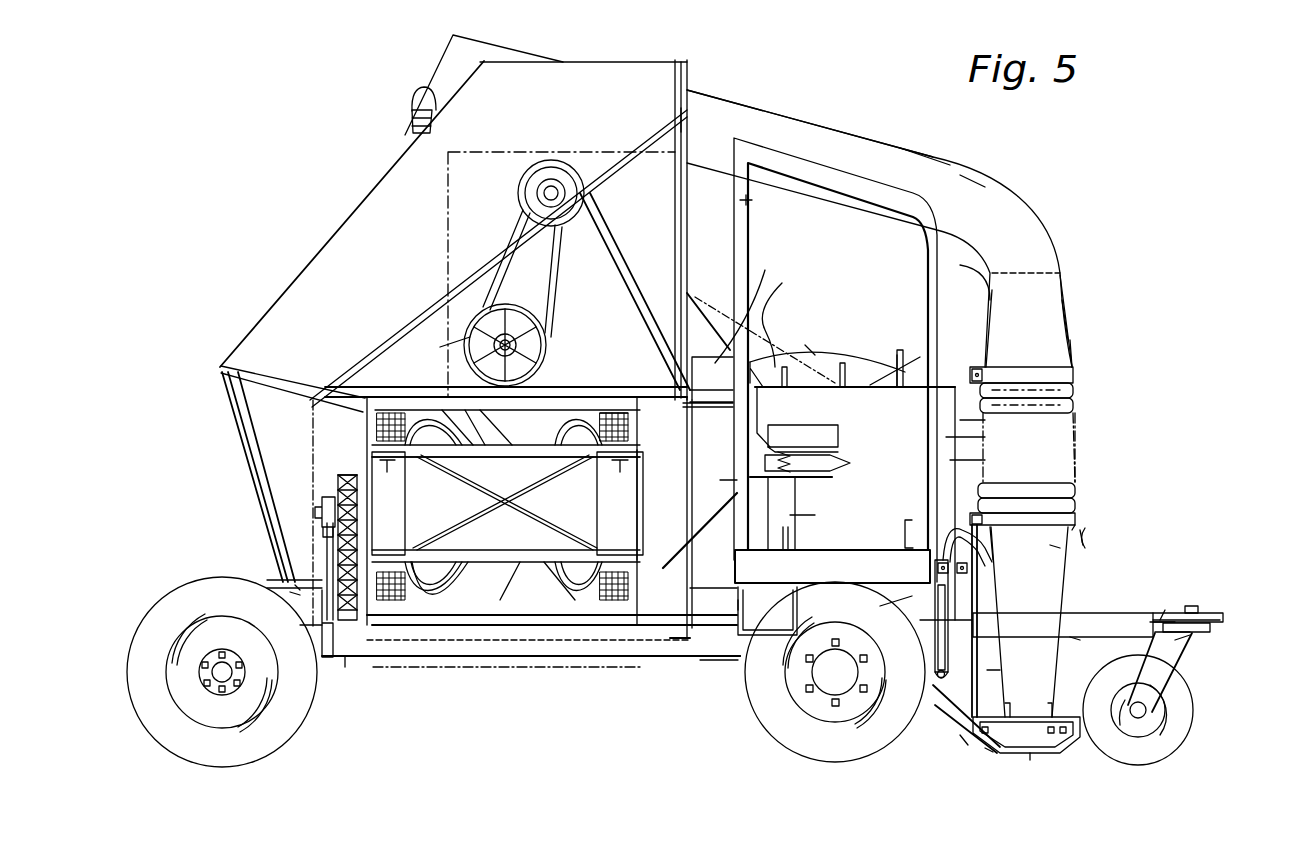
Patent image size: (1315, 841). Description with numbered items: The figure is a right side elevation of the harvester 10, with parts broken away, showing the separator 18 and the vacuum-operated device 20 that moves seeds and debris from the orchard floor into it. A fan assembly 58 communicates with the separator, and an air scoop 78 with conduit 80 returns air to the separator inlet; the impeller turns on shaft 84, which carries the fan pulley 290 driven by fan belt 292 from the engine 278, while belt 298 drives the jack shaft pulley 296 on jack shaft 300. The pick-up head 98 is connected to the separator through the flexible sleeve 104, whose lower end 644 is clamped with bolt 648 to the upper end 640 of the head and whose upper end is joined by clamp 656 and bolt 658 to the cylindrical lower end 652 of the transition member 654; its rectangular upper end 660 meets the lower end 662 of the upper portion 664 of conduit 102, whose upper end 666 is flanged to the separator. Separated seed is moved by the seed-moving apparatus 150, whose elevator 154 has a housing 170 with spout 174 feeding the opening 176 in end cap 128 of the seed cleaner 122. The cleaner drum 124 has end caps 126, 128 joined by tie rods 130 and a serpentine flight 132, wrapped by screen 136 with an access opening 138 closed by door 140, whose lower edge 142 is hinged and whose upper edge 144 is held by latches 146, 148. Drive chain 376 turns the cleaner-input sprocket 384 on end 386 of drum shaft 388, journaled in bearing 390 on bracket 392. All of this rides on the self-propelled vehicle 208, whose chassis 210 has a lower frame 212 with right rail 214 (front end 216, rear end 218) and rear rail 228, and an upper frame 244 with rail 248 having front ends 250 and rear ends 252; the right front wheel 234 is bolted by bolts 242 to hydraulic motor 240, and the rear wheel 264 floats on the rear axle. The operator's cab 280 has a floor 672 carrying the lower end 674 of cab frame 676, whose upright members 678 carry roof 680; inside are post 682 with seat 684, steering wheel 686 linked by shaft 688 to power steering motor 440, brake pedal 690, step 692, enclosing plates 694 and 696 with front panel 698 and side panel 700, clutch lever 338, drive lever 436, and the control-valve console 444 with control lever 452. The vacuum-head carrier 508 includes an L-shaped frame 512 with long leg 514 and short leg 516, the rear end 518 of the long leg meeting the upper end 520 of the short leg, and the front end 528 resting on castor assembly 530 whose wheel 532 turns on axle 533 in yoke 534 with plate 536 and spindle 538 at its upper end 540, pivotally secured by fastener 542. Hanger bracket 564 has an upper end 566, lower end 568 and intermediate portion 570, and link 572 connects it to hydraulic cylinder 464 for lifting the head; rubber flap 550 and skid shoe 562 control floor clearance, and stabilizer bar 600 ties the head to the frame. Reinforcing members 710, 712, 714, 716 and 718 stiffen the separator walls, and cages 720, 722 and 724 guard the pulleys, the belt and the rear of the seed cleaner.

The harvester 10 is at (1172, 270).
The separator 18 is at (350, 208).
The device 20 is at (1100, 525).
The fan assembly 58 is at (497, 40).
The air scoop 78 is at (429, 87).
The conduit 80 is at (412, 125).
The shaft 84 is at (552, 190).
The pick-up head 98 is at (1100, 527).
The conduit 102 is at (895, 138).
The flexible sleeve 104 is at (1065, 462).
The seed cleaner 122 is at (640, 632).
The cylindrical drum 124 is at (620, 632).
The end cap 126 is at (372, 657).
The end cap 128 is at (705, 557).
The tie rods 130 is at (493, 444).
The serpentine-shaped flight 132 is at (445, 600).
The screen 136 is at (385, 608).
The access opening 138 is at (425, 525).
The door 140 is at (653, 512).
The lower edge 142 is at (640, 530).
The upper edge 144 is at (628, 440).
The latch 146 is at (385, 480).
The latch 148 is at (612, 478).
The seed-moving apparatus 150 is at (820, 545).
The elevator 154 is at (700, 340).
The housing 170 is at (790, 262).
The spout 174 is at (790, 495).
The opening 176 is at (728, 513).
The self-propelled vehicle 208 is at (442, 672).
The chassis 210 is at (723, 645).
The lower frame 212 is at (668, 657).
The right rail 214 is at (735, 672).
The front end 216 is at (935, 675).
The rear end 218 is at (350, 660).
The rear rail 228 is at (318, 632).
The right front wheel 234 is at (840, 763).
The hydraulic motor 240 is at (830, 680).
The bolts 242 is at (840, 643).
The upper frame 244 is at (300, 566).
The rail 248 is at (277, 583).
The front ends 250 is at (878, 608).
The rear ends 252 is at (292, 594).
The rear wheel 264 is at (130, 688).
The engine 278 is at (812, 320).
The operator's cab 280 is at (978, 195).
The fan pulley 290 is at (566, 175).
The fan belt 292 is at (600, 283).
The jack shaft pulley 296 is at (470, 340).
The belt 298 is at (518, 224).
The jack shaft 300 is at (546, 345).
The clutch lever 338 is at (782, 283).
The auger-cleaner drive chain 376 is at (345, 478).
The cleaner-input sprocket 384 is at (350, 475).
The end 386 is at (315, 513).
The cleaner-drum shaft 388 is at (405, 504).
The bearing 390 is at (320, 493).
The bracket 392 is at (333, 598).
The lever 436 is at (843, 362).
The power steering motor 440 is at (983, 432).
The hydraulic-control-valve console 444 is at (953, 358).
The control lever 452 is at (898, 348).
The hydraulic cylinder 464 is at (970, 740).
The vacuum-head carrier 508 is at (1130, 610).
The L-shaped frame 512 is at (1160, 603).
The long leg 514 is at (1090, 635).
The short leg 516 is at (1000, 670).
The rear end 518 is at (1025, 612).
The upper end 520 is at (1000, 625).
The front end 528 is at (1212, 626).
The castor assembly 530 is at (1225, 735).
The wheel 532 is at (1193, 710).
The axle 533 is at (1140, 722).
The yoke 534 is at (1185, 668).
The plate 536 is at (1195, 635).
The spindle 538 is at (1193, 605).
The upper end 540 is at (1195, 640).
The fastener 542 is at (1210, 612).
The first rubber flap 550 is at (1007, 755).
The skid shoe 562 is at (1040, 755).
The hanger bracket 564 is at (1030, 518).
The upper end 566 is at (1000, 555).
The lower end 568 is at (952, 760).
The intermediate portion 570 is at (995, 605).
The link 572 is at (995, 538).
The stabilizer bar 600 is at (968, 738).
The upper end 640 is at (1062, 548).
The lower end 644 is at (1002, 507).
The bolt 648 is at (988, 485).
The lower end 652 is at (1078, 352).
The transition member 654 is at (1072, 322).
The clamp 656 is at (1075, 374).
The bolt 658 is at (985, 365).
The upper end 660 is at (1070, 294).
The lower end 662 is at (1070, 262).
The upper portion 664 is at (952, 165).
The upper end 666 is at (695, 90).
The floor 672 is at (832, 548).
The lower end 674 is at (750, 555).
The cab frame 676 is at (945, 280).
The upright members 678 is at (752, 205).
The roof 680 is at (780, 148).
The post 682 is at (812, 516).
The seat 684 is at (840, 440).
The steering wheel 686 is at (865, 365).
The shaft 688 is at (910, 395).
The brake pedal 690 is at (903, 518).
The step 692 is at (770, 640).
The plate 694 is at (796, 412).
The plate 696 is at (987, 400).
The front panel 698 is at (955, 464).
The side panel 700 is at (960, 437).
The reinforcing member 710 is at (690, 118).
The reinforcing member 712 is at (628, 170).
The reinforcing member 714 is at (438, 370).
The reinforcing member 716 is at (260, 368).
The reinforcing member 718 is at (263, 507).
The cage 720 is at (470, 150).
The cage 722 is at (792, 340).
The cage 724 is at (300, 385).